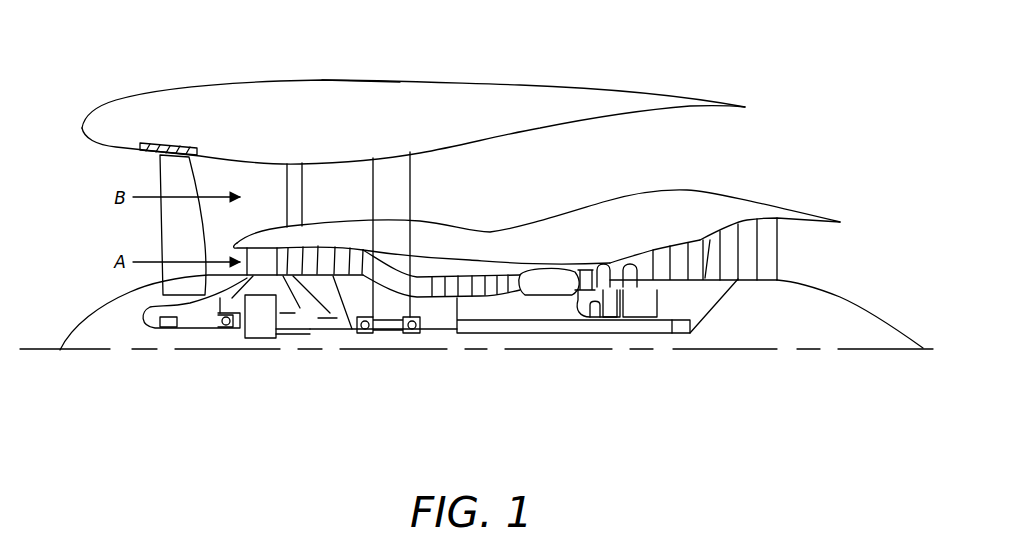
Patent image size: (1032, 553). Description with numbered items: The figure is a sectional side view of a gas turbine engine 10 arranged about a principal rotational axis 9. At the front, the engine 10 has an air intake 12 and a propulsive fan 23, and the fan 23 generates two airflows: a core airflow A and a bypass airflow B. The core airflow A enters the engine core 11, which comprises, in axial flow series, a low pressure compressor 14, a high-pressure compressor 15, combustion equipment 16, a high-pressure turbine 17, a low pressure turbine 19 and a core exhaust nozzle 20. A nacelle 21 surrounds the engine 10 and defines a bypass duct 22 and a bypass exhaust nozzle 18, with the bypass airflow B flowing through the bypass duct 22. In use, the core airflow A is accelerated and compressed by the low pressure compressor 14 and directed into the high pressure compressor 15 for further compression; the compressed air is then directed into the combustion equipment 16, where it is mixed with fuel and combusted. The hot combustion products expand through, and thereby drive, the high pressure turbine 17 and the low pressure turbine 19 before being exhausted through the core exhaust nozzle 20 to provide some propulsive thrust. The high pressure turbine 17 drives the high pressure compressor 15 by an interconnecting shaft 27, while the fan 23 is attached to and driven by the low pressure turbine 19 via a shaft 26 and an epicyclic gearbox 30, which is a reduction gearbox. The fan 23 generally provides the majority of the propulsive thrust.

The principal rotational axis 9 is at (747, 350).
The gas turbine engine 10 is at (162, 96).
The core 11 is at (518, 247).
The air intake 12 is at (112, 175).
The low pressure compressor 14 is at (330, 253).
The high-pressure compressor 15 is at (478, 287).
The combustion equipment 16 is at (550, 287).
The high-pressure turbine 17 is at (608, 267).
The bypass exhaust nozzle 18 is at (722, 143).
The low pressure turbine 19 is at (747, 237).
The core exhaust nozzle 20 is at (803, 252).
The nacelle 21 is at (388, 93).
The bypass duct 22 is at (675, 161).
The propulsive fan 23 is at (163, 228).
The shaft 26 is at (467, 337).
The interconnecting shaft 27 is at (512, 320).
The epicyclic gearbox 30 is at (257, 328).